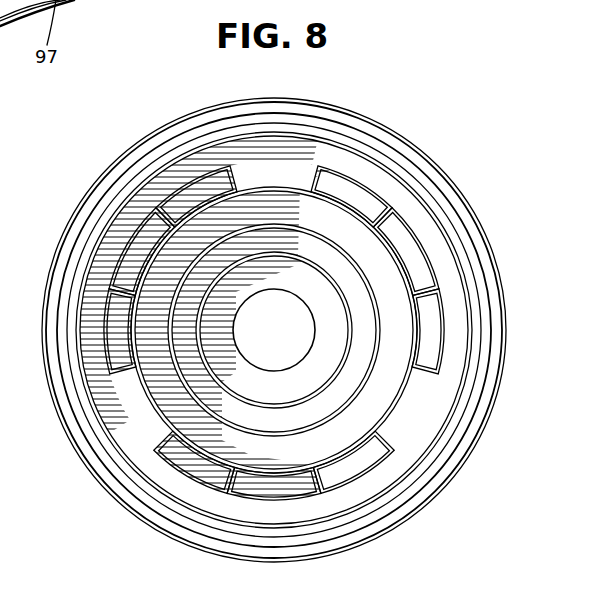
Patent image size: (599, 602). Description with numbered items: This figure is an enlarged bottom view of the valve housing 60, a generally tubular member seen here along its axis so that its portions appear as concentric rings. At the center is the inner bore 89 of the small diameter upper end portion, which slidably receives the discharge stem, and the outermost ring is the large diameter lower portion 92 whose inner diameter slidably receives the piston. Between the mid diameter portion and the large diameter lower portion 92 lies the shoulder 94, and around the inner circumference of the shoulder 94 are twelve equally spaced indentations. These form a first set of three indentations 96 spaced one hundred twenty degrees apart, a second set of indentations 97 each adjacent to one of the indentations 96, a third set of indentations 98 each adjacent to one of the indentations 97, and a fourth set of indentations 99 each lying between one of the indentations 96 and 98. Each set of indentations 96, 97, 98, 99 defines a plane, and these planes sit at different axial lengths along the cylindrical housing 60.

The valve housing 60 is at (370, 100).
The inner bore 89 is at (246, 368).
The large diameter lower portion 92 is at (210, 106).
The shoulder 94 is at (370, 173).
The first set of indentations 96 is at (277, 172).
The second set of indentations 97 is at (377, 205).
The third set of indentations 98 is at (418, 277).
The fourth set of indentations 99 is at (433, 343).